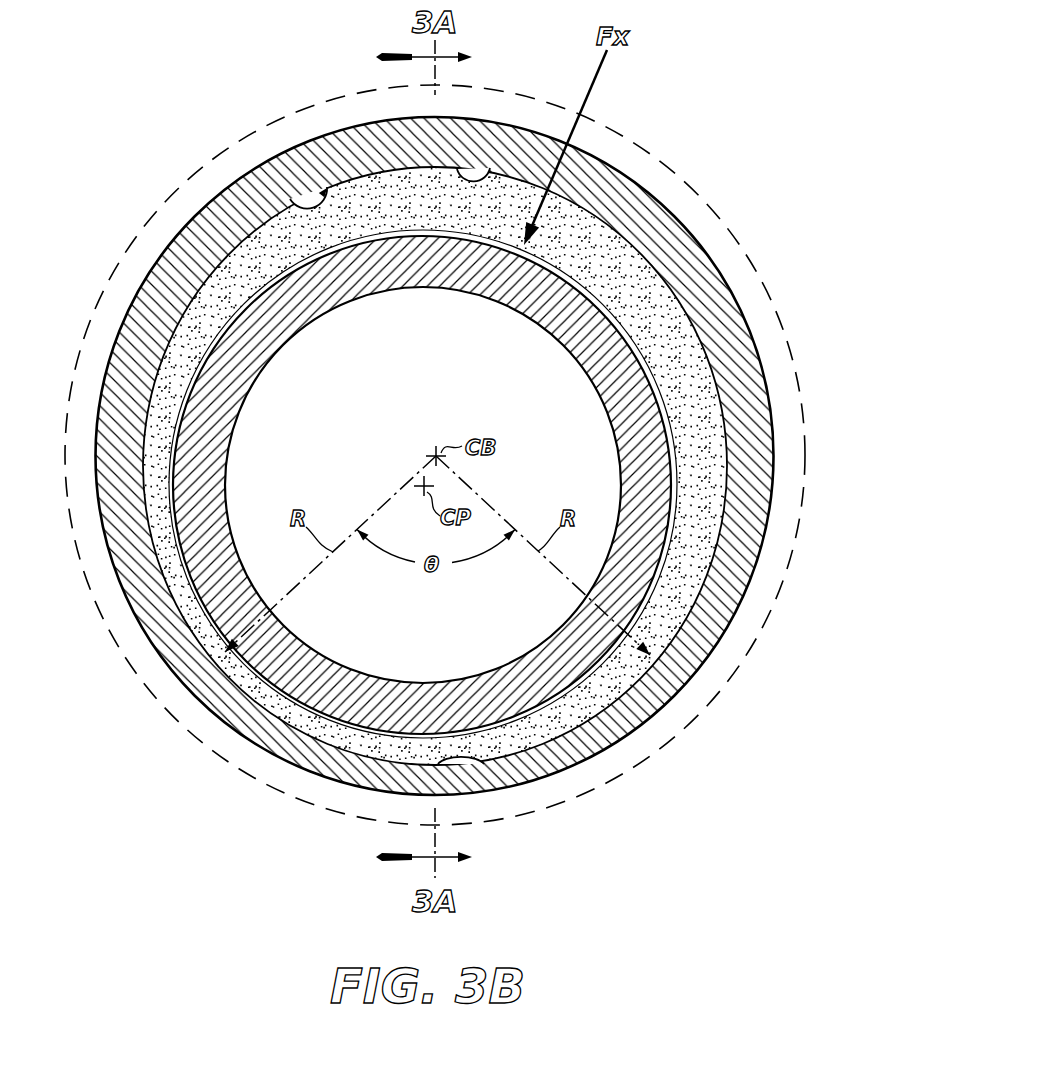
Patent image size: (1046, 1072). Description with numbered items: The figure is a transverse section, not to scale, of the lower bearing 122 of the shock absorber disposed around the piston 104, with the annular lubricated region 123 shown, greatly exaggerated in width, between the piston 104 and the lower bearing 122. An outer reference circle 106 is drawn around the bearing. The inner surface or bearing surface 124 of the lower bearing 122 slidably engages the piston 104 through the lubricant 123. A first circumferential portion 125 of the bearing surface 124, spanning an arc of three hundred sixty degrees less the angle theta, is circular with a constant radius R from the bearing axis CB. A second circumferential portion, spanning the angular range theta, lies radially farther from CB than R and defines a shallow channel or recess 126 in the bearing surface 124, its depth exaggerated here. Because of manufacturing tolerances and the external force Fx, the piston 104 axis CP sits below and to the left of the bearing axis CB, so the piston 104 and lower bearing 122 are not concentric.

The piston 104 is at (662, 462).
The outer boundary circle 106 is at (628, 144).
The lower bearing 122 is at (696, 256).
The lubricated region 123 is at (698, 333).
The bearing surface 124 is at (273, 193).
The first circumferential portion 125 is at (489, 168).
The shallow channel or recess 126 is at (487, 766).